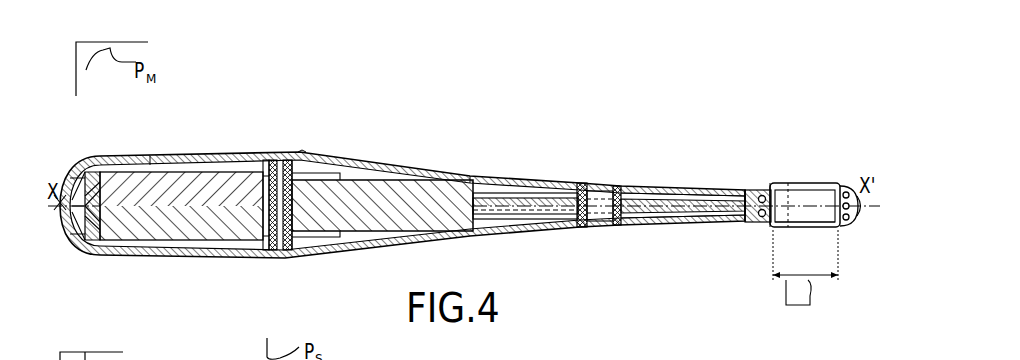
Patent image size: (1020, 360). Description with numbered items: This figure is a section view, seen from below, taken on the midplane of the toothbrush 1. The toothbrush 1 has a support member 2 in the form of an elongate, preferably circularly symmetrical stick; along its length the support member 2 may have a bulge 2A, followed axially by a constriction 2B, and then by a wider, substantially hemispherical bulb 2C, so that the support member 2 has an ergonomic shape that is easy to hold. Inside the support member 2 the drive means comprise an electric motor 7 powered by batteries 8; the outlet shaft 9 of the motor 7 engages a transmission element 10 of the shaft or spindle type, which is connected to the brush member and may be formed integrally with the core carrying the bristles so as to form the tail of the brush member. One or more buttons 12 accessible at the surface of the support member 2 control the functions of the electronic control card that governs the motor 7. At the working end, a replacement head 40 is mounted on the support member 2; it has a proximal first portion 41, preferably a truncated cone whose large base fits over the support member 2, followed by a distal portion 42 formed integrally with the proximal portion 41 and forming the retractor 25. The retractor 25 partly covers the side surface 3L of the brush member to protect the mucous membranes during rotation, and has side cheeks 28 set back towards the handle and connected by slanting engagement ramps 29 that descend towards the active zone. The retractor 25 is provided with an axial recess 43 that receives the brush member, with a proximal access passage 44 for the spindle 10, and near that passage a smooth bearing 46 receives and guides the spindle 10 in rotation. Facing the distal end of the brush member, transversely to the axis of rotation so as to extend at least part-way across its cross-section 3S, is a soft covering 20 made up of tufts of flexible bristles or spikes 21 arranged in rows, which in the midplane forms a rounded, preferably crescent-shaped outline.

The toothbrush 1 is at (704, 72).
The support member 2 is at (234, 156).
The bulge 2A is at (303, 151).
The constriction 2B is at (161, 165).
The bulb 2C is at (80, 162).
The electric motor 7 is at (312, 259).
The batteries 8 is at (157, 162).
The outlet shaft 9 is at (508, 218).
The transmission element 10 is at (686, 222).
The buttons 12 is at (482, 170).
The soft covering 20 is at (849, 188).
The tufts of flexible bristles or spikes 21 is at (840, 184).
The retractor 25 is at (859, 234).
The side cheeks 28 is at (806, 186).
The engagement ramps 29 is at (798, 238).
The side surface 3L is at (800, 184).
The cross-section 3S is at (764, 190).
The replacement head 40 is at (728, 221).
The proximal first portion 41 is at (632, 185).
The distal portion 42 is at (778, 180).
The axial recess 43 is at (748, 188).
The proximal access passage 44 is at (740, 221).
The bearing 46 is at (763, 222).